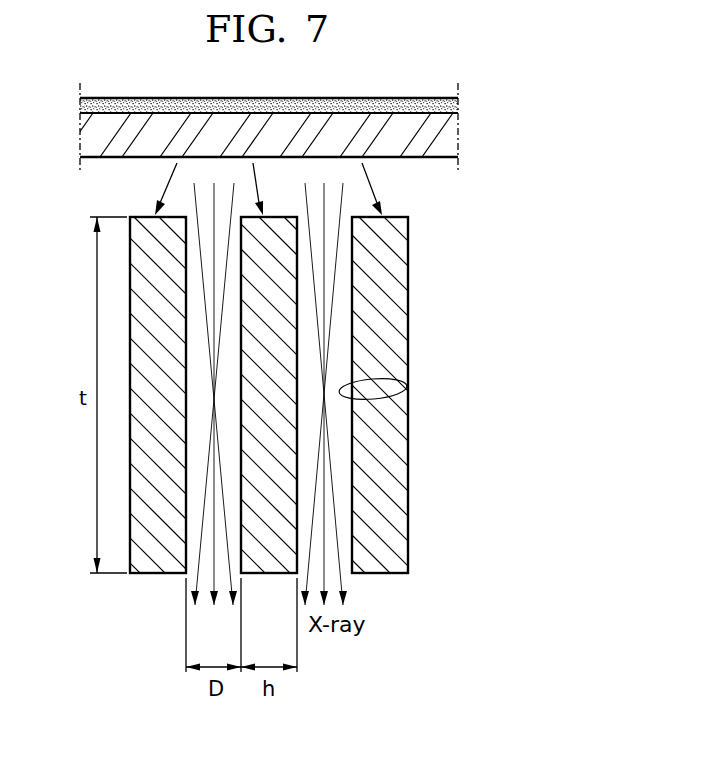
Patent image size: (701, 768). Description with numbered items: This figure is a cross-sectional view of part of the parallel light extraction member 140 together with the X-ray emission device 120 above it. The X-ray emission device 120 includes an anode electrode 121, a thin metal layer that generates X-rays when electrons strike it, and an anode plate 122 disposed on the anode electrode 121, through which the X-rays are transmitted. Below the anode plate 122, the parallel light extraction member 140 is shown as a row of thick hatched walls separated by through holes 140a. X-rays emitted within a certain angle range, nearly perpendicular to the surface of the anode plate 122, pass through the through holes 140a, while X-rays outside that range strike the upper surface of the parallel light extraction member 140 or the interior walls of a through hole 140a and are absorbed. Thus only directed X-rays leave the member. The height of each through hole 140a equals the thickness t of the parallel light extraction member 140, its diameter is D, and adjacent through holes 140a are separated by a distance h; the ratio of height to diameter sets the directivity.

The X-ray emission device 120 is at (328, 126).
The anode electrode 121 is at (447, 104).
The anode plate 122 is at (445, 133).
The parallel light extraction member 140 is at (432, 333).
The through hole 140a is at (405, 388).